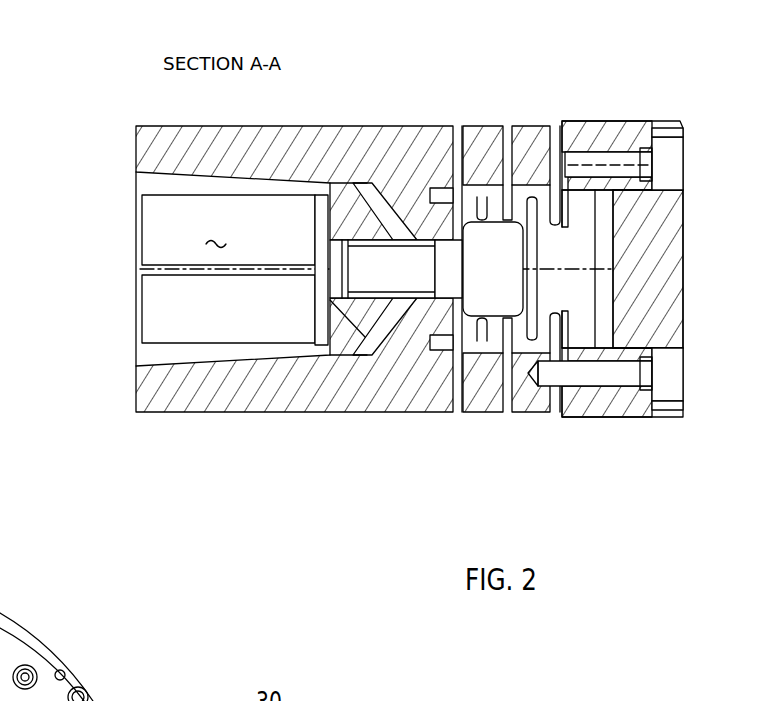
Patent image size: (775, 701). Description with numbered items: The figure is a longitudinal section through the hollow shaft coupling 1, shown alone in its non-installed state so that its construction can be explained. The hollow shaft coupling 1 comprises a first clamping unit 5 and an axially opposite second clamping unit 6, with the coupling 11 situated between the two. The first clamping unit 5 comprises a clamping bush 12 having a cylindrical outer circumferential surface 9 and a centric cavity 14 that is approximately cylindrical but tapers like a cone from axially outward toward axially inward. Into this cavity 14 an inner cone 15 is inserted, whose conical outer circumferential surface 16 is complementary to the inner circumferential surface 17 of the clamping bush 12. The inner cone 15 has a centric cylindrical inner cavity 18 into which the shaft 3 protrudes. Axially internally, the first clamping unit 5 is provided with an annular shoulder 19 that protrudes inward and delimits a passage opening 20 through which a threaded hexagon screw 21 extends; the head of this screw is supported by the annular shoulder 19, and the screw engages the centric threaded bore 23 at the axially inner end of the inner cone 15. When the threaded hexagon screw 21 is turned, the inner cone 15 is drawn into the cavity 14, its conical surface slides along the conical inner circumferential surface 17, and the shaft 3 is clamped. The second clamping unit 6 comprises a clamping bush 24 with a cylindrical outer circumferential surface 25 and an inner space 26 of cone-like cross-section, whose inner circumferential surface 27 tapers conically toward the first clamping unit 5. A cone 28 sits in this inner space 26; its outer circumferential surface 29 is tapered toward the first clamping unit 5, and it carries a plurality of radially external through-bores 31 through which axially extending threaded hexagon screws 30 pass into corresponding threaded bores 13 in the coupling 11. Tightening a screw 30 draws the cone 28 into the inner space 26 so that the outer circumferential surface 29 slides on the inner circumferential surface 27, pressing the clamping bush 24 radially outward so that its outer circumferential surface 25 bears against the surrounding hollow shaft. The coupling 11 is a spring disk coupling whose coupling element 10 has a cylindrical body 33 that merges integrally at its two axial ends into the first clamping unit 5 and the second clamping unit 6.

The hollow shaft coupling 1 is at (0, 442).
The shaft 3 is at (216, 233).
The first clamping unit 5 is at (267, 440).
The second clamping unit 6 is at (613, 447).
The cylindrical outer circumferential surface 9 is at (222, 412).
The coupling element 10 is at (562, 420).
The coupling 11 is at (583, 108).
The clamping bush 12 is at (193, 382).
The threaded bores 13 is at (563, 413).
The cavity 14 is at (381, 235).
The inner cone 15 is at (352, 215).
The conical outer circumferential surface 16 is at (293, 360).
The inner circumferential surface 17 is at (172, 188).
The inner cavity 18 is at (202, 310).
The annular shoulder 19 is at (432, 300).
The passage opening 20 is at (445, 330).
The threaded hexagon screw 21 is at (445, 285).
The centric threaded bore 23 is at (396, 235).
The clamping bush 24 is at (615, 148).
The cylindrical outer circumferential surface 25 is at (641, 415).
The inner space 26 is at (612, 300).
The inner circumferential surface 27 is at (633, 140).
The cone 28 is at (665, 240).
The outer circumferential surface 29 is at (655, 387).
The threaded hexagon screw 30 is at (670, 163).
The through-bores 31 is at (640, 153).
The cylindrical body 33 is at (0, 585).